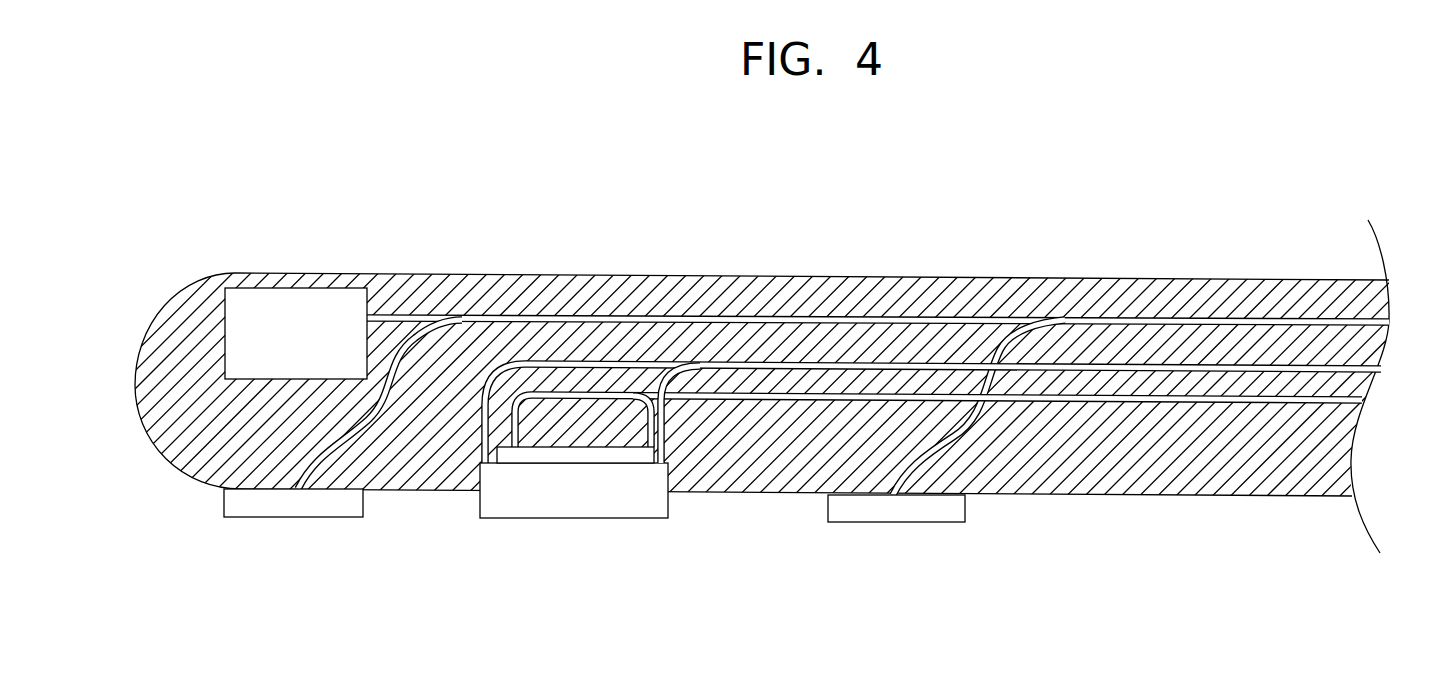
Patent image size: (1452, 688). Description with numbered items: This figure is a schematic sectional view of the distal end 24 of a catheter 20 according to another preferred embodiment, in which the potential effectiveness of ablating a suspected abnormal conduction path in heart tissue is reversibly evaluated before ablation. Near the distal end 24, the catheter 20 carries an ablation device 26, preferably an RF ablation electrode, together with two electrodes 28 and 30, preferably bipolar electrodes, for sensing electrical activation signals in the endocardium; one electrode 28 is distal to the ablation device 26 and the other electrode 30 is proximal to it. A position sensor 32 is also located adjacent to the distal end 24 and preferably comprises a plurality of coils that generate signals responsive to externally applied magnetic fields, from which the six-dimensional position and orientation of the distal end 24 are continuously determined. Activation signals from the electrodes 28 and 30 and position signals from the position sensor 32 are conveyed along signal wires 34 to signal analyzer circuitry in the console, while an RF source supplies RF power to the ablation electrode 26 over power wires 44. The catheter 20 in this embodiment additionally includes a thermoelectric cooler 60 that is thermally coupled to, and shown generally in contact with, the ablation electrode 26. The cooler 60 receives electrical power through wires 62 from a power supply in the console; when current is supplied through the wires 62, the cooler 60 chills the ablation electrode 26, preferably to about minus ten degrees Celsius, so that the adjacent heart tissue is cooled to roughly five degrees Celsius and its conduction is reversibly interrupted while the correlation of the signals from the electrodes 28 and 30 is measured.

The catheter 20 is at (903, 279).
The distal end 24 is at (153, 325).
The ablation device 26 is at (542, 510).
The electrode 28 is at (263, 510).
The electrode 30 is at (905, 518).
The position sensor 32 is at (266, 300).
The signal wires 34 is at (1067, 319).
The power wires 44 is at (1381, 370).
The thermoelectric cooler 60 is at (608, 456).
The wires 62 is at (1237, 398).